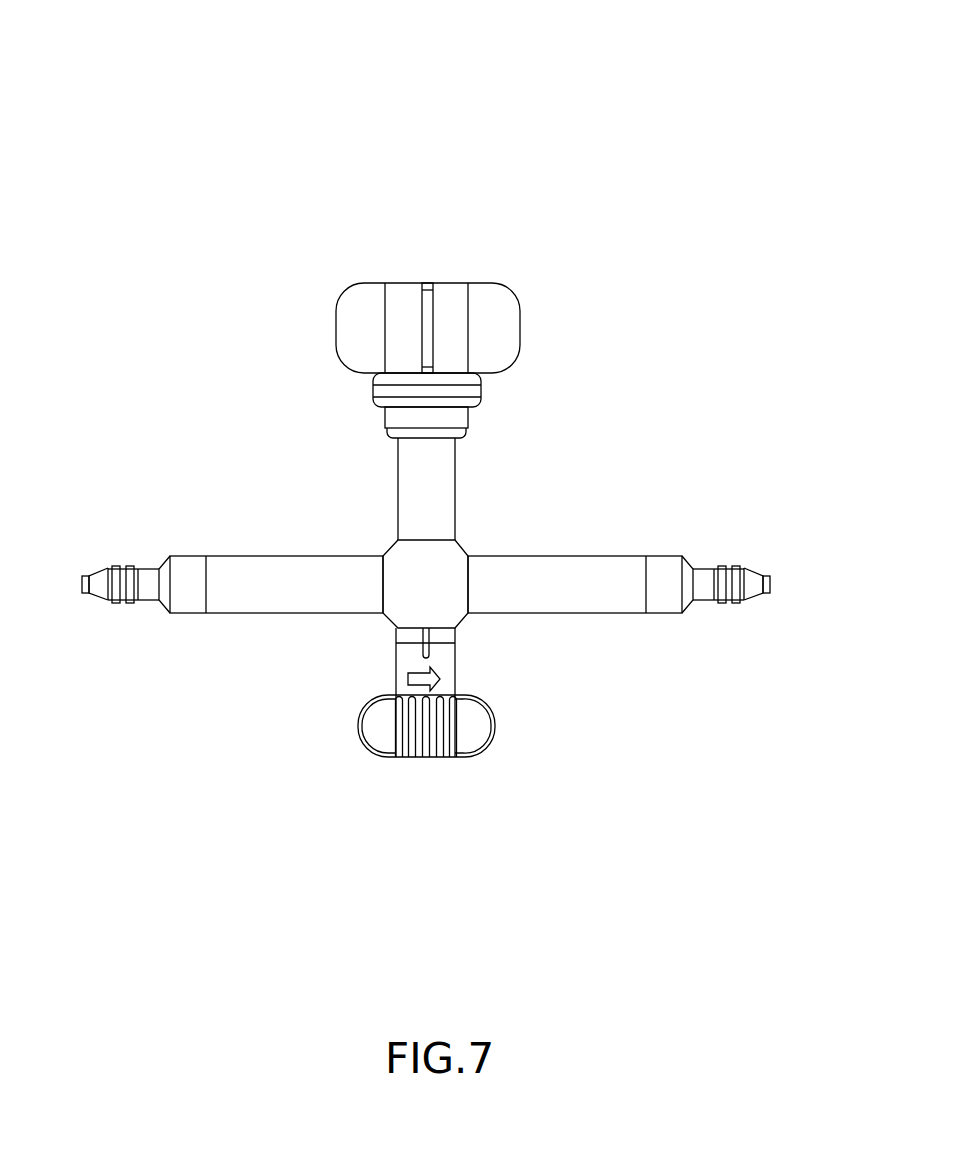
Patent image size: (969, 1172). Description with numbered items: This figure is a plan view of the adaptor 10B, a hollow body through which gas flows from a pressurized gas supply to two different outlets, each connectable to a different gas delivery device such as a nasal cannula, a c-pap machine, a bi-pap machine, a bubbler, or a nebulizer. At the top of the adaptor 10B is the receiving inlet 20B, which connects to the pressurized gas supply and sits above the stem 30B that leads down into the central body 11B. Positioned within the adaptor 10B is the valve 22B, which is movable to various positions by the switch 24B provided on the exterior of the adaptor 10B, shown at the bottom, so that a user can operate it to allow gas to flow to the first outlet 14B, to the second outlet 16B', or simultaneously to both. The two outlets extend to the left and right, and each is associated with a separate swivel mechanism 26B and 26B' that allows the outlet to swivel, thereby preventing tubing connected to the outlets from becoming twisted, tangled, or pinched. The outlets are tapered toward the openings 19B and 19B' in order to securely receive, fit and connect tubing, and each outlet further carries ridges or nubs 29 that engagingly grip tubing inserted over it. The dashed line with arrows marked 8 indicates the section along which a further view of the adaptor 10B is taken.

The adaptor 10B is at (557, 70).
The receiving inlet 20B is at (488, 283).
The stem 30B is at (456, 472).
The valve body 11B is at (397, 507).
The valve 22B is at (464, 553).
The swivel mechanism 26B is at (272, 558).
The swivel mechanism 26B' is at (586, 553).
The first outlet 14B is at (88, 574).
The right connector 16B' is at (766, 577).
The opening 19B is at (55, 601).
The opening 19B' is at (806, 593).
The ridges or nubs 29 is at (117, 603).
The switch 24B is at (420, 757).
The section line 8- 8 is at (805, 205).